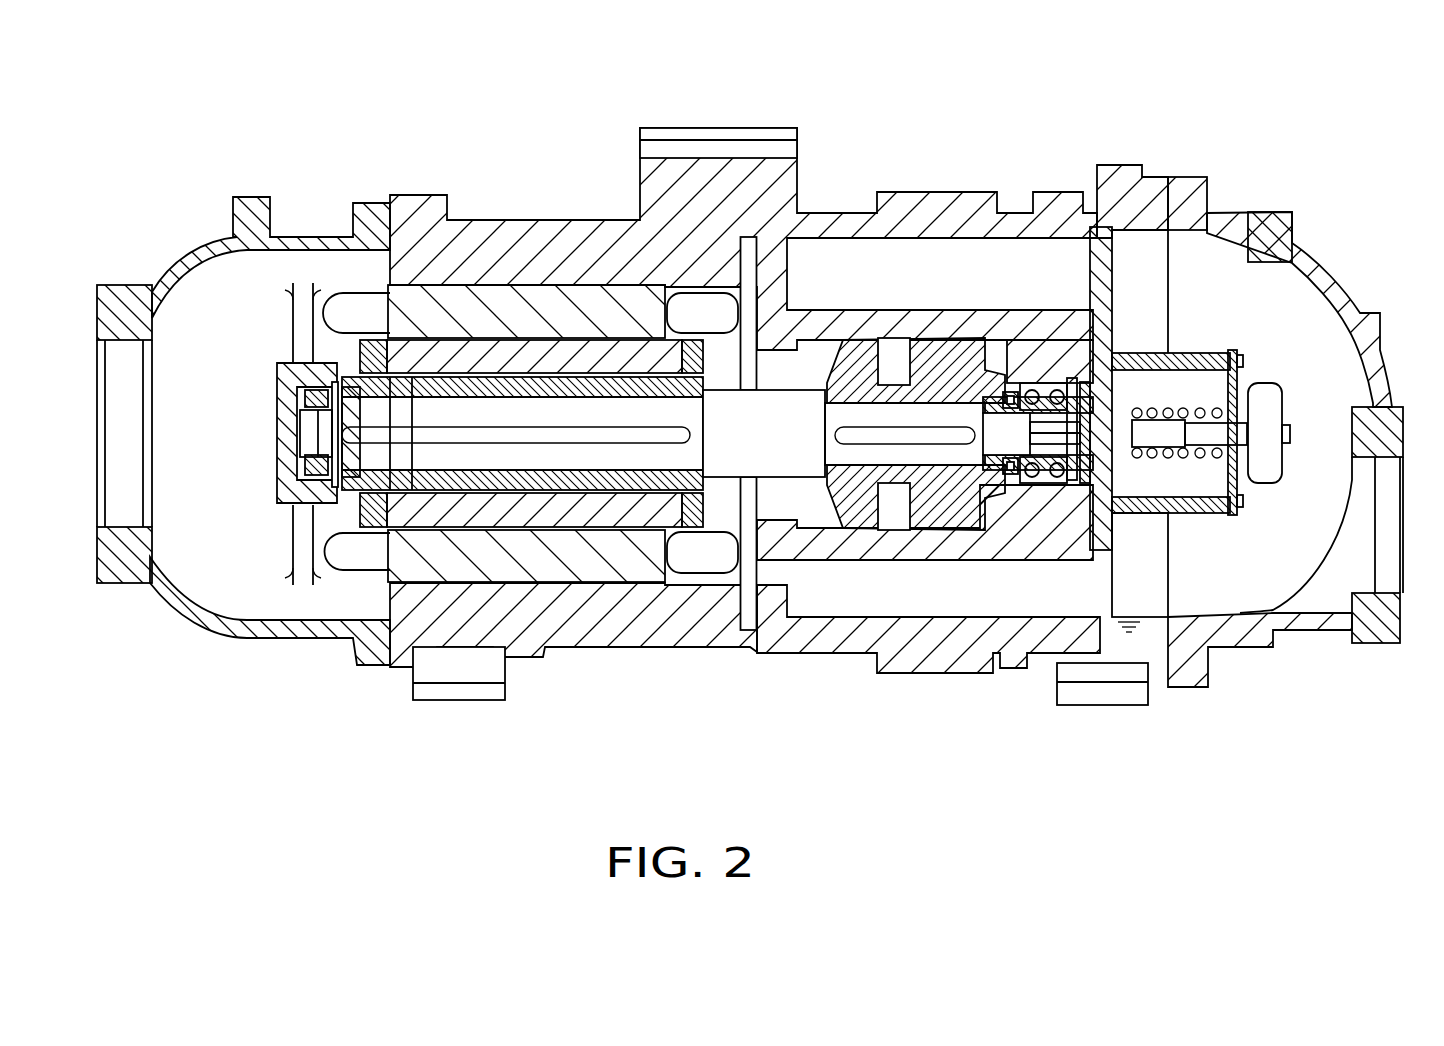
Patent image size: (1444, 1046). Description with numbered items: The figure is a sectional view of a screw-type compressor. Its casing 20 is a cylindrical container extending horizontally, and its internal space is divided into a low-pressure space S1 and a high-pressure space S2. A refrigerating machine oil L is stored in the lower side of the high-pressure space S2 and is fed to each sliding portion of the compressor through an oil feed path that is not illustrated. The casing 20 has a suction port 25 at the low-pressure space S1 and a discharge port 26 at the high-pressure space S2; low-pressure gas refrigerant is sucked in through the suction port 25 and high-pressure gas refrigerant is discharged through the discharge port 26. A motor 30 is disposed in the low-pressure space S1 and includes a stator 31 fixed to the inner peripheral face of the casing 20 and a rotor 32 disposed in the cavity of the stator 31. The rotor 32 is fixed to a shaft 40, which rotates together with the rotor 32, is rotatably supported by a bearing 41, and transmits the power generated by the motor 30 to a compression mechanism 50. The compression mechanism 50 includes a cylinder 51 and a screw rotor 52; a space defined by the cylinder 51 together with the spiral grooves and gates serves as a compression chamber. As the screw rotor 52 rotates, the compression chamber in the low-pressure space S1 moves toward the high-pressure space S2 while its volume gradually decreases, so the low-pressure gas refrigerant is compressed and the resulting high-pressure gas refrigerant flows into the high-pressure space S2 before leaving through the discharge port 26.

The casing 20 is at (180, 265).
The suction port 25 is at (110, 484).
The discharge port 26 is at (1400, 563).
The motor 30 is at (531, 324).
The stator 31 is at (471, 322).
The rotor 32 is at (546, 357).
The shaft 40 is at (768, 440).
The bearing 41 is at (323, 465).
The compression mechanism 50 is at (1058, 288).
The cylinder 51 is at (917, 315).
The screw rotor 52 is at (993, 350).
The refrigerating machine oil L is at (1152, 635).
The low-pressure space S1 is at (226, 451).
The high-pressure space S2 is at (1287, 331).